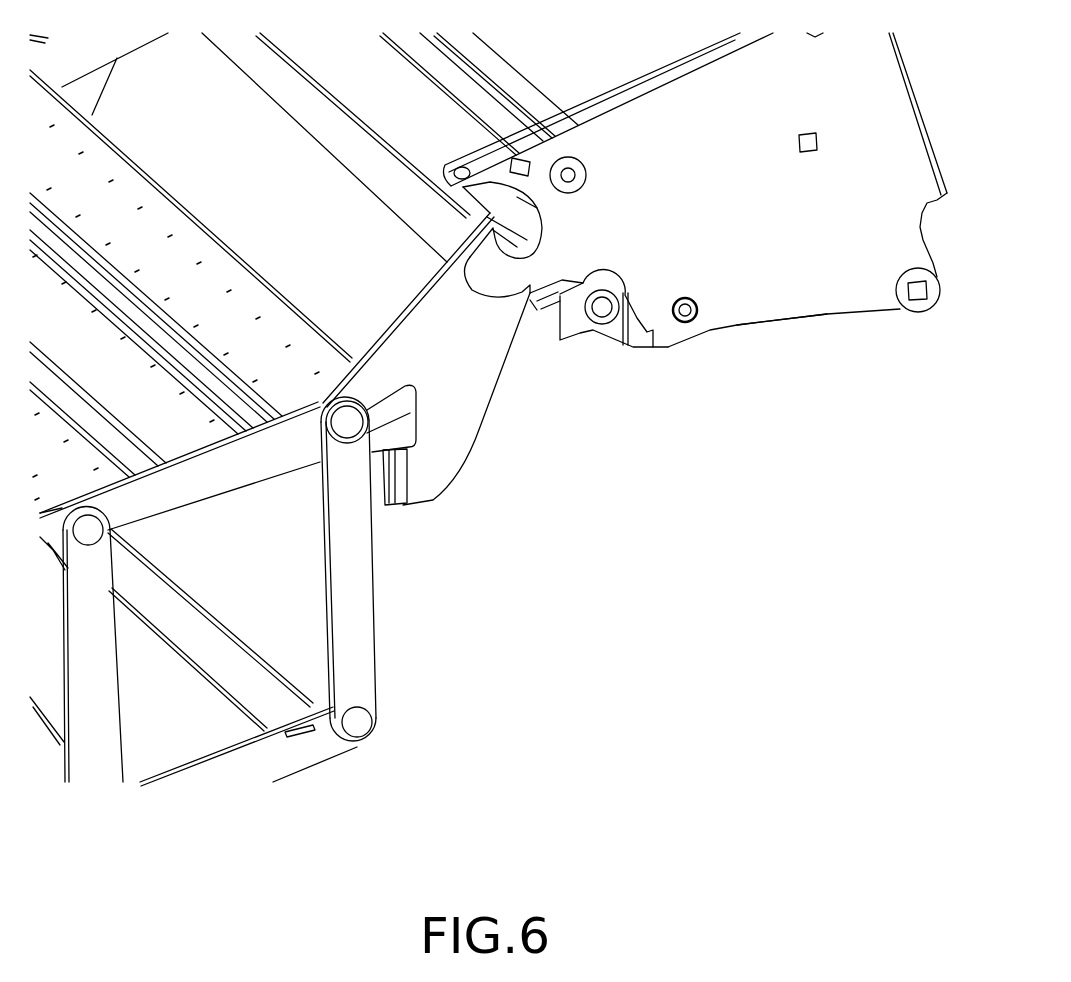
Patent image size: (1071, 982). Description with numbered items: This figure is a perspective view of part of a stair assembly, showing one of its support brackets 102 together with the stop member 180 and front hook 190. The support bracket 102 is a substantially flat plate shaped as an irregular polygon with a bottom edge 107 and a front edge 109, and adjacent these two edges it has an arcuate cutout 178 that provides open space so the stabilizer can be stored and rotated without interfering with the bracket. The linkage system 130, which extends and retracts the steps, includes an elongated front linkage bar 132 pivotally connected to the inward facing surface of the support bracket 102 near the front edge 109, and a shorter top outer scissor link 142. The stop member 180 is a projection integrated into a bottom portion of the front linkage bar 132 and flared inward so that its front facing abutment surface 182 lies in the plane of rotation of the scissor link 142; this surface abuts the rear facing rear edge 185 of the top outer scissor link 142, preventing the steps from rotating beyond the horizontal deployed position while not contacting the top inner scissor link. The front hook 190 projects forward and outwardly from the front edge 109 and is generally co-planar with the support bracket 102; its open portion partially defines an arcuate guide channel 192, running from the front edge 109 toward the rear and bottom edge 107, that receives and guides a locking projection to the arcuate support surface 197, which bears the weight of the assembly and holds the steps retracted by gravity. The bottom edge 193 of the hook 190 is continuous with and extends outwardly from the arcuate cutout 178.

The support bracket 102 is at (763, 210).
The bottom edge 107 is at (737, 325).
The front edge 109 is at (444, 182).
The linkage system 130 is at (392, 691).
The front linkage bar 132 is at (443, 435).
The top outer scissor link 142 is at (347, 573).
The arcuate cutout 178 is at (603, 270).
The stop member 180 is at (397, 497).
The front facing abutment surface 182 is at (368, 480).
The rear edge 185 is at (373, 615).
The front hook 190 is at (493, 277).
The arcuate guide channel 192 is at (452, 209).
The bottom edge 193 is at (527, 295).
The arcuate support surface 197 is at (522, 250).